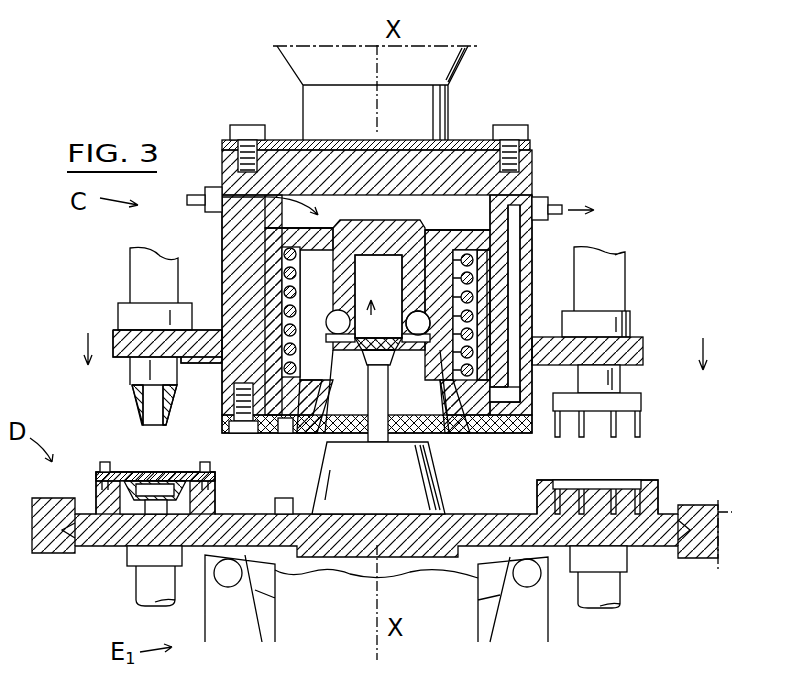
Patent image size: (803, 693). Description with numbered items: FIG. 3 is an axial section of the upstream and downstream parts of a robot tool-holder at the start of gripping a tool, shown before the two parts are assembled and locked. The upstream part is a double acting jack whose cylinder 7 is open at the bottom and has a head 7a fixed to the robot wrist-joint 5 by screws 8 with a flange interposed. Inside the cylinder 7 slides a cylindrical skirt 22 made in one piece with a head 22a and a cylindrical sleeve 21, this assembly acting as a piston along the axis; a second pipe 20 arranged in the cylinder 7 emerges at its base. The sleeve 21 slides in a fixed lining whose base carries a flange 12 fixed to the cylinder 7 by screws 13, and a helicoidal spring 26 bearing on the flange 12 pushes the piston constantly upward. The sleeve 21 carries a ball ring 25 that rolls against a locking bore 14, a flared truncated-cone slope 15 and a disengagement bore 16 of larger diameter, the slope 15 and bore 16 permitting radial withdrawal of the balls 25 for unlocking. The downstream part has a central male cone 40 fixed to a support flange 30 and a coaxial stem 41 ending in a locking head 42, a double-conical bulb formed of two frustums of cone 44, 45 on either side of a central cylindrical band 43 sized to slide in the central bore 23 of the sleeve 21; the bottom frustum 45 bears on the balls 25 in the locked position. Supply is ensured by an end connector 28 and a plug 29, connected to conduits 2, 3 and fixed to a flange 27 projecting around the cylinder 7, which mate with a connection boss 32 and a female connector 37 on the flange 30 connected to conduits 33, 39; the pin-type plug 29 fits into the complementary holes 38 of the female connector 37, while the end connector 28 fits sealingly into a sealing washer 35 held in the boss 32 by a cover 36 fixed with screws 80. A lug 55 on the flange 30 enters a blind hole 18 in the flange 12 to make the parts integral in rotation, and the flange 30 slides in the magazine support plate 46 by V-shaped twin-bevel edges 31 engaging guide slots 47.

The conduit 2 is at (142, 280).
The conduit 3 is at (612, 288).
The wrist-joint 5 is at (445, 95).
The cylinder 7 is at (238, 266).
The head 7a is at (472, 168).
The screws 8 is at (248, 128).
The flange 12 is at (460, 435).
The screws 13 is at (236, 410).
The bore 14 is at (352, 240).
The flared slope in truncated cone shape 15 is at (378, 285).
The disengagement bore 16 is at (318, 406).
The blind hole 18 is at (285, 432).
The second pipe 20 is at (514, 255).
The cylindrical sleeve 21 is at (434, 222).
The cylindrical skirt 22 is at (278, 238).
The head 22a is at (370, 250).
The central bore 23 is at (378, 296).
The ball ring 25 is at (422, 323).
The helicoidal spring 26 is at (290, 312).
The flange 27 is at (635, 352).
The end connector 28 is at (135, 396).
The plug 29 is at (635, 398).
The support flange 30 is at (523, 530).
The V shaped edges with twin bevels 31 is at (72, 532).
The connection boss 32 is at (102, 500).
The conduit 33 is at (142, 590).
The sealing washer 35 is at (145, 490).
The cover 36 is at (124, 480).
The female connector 37 is at (544, 506).
The guide rails 38 is at (627, 492).
The conduit 39 is at (620, 596).
The central male cone 40 is at (428, 490).
The stem 41 is at (390, 428).
The head 42 is at (338, 372).
The central cylindrical band 43 is at (395, 352).
The frustum of cone 44 is at (475, 298).
The bottom frustum of cone 45 is at (388, 368).
The support plate 46 is at (740, 533).
The guide slots 47 is at (686, 514).
The lug 55 is at (275, 503).
The screws 80 is at (105, 462).